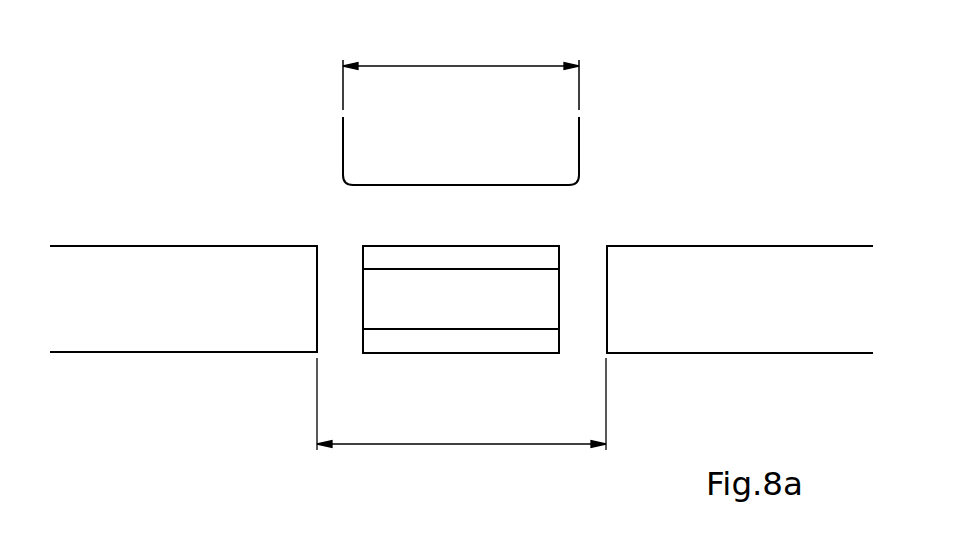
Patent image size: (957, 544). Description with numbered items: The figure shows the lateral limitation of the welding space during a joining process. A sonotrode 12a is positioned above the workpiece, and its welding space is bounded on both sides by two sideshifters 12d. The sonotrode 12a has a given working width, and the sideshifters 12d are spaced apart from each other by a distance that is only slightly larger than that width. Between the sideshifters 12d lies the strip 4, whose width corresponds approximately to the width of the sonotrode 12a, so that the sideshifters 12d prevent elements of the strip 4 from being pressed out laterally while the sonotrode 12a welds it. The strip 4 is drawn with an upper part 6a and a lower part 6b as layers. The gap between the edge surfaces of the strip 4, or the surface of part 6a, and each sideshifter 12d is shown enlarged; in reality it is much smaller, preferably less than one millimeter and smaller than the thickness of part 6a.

The sonotrode 12a is at (552, 152).
The sideshifter 12d is at (170, 267).
The strip 4 is at (405, 305).
The part 6a is at (534, 256).
The second contact surface / layer 6b is at (532, 340).